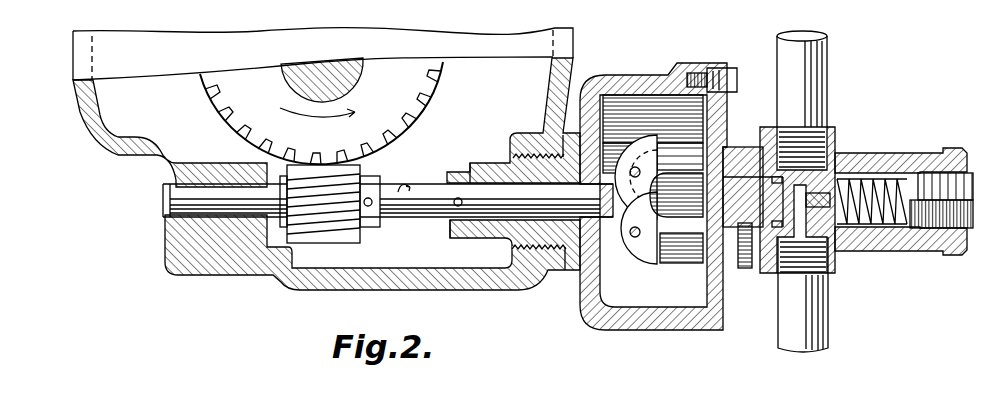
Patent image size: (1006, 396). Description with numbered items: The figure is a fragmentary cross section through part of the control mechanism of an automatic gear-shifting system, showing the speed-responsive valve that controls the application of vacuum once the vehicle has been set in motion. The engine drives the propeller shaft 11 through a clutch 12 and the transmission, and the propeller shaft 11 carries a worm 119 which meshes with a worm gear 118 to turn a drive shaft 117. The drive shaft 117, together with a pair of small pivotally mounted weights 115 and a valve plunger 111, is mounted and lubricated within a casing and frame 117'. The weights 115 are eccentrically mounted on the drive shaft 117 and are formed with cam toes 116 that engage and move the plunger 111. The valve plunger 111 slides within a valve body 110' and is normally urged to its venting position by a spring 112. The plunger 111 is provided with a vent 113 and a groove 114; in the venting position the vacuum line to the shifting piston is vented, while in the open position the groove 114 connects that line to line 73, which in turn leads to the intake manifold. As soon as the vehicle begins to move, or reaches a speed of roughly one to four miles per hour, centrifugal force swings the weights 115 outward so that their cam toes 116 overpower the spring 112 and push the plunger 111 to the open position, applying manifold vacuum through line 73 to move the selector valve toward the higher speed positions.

The propeller shaft 11 is at (313, 67).
The clutch 12 is at (808, 318).
The line 73 is at (810, 70).
The valve body 110' is at (904, 183).
The valve plunger 111 is at (741, 195).
The spring 112 is at (853, 229).
The vent 113 is at (821, 196).
The groove 114 is at (779, 230).
The weights 115 is at (670, 148).
The cam toes 116 is at (660, 187).
The drive shaft 117 is at (388, 224).
The casing and frame 117' is at (658, 215).
The worm gear 118 is at (327, 237).
The worm 119 is at (423, 112).